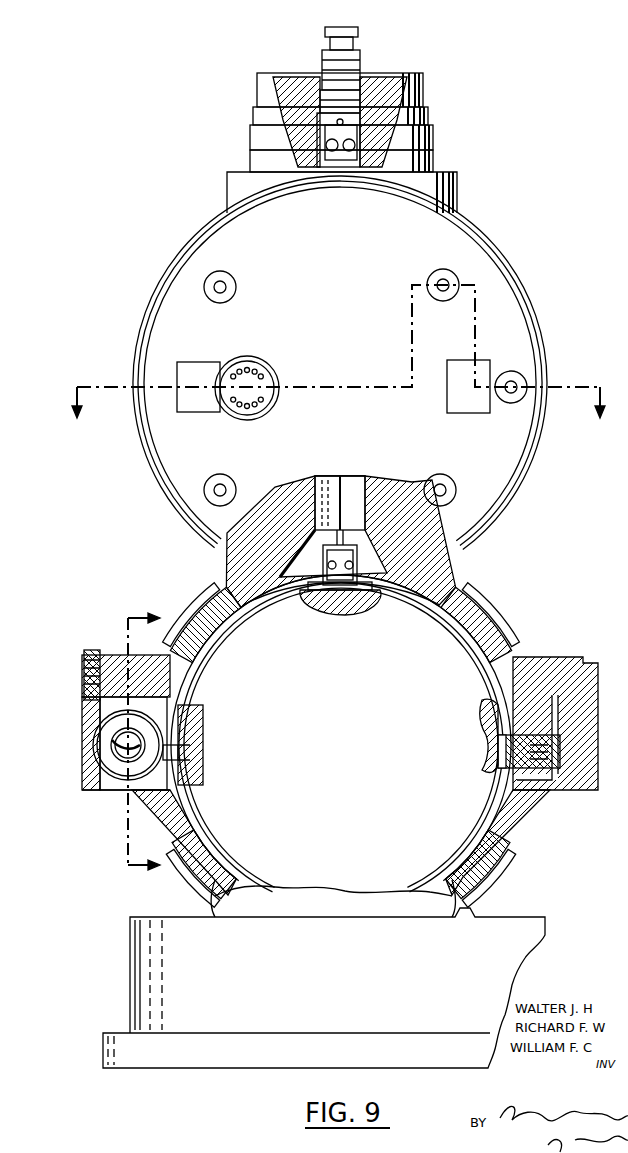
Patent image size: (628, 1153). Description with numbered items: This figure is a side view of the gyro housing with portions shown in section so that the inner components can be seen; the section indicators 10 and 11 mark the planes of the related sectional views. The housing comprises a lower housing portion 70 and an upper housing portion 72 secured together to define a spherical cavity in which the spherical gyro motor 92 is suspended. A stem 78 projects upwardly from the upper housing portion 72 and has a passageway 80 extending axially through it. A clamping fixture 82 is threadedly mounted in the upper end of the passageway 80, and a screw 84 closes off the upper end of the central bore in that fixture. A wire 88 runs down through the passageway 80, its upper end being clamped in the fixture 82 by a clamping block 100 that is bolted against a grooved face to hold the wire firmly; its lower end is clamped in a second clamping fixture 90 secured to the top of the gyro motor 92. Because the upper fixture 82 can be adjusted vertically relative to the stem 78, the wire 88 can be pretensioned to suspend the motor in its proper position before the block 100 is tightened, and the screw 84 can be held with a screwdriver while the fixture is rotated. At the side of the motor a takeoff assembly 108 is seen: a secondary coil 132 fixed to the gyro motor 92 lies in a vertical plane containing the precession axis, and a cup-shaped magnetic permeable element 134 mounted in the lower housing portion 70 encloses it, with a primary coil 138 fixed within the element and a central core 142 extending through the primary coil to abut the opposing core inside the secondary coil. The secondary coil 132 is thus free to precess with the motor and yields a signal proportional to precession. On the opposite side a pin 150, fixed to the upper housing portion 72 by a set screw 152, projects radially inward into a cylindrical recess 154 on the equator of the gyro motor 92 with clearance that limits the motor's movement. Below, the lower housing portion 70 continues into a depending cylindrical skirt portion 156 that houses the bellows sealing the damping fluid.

The section line 10- 10 is at (339, 368).
The section line 11- 11 is at (157, 742).
The lower housing portion 70 is at (525, 830).
The upper housing portion 72 is at (210, 605).
The stem 78 is at (458, 197).
The passageway 80 is at (358, 490).
The clamping fixture 82 is at (327, 62).
The screw 84 is at (358, 30).
The wire 88 is at (330, 500).
The clamping fixture 90 is at (348, 575).
The spherical gyro motor 92 is at (374, 744).
The clamping block 100 is at (347, 167).
The takeoff assembly 108 is at (100, 760).
The secondary coil 132 is at (95, 720).
The cup-shaped magnetic permeable element 134 is at (100, 745).
The primary coil 138 is at (185, 775).
The central core 142 is at (125, 757).
The pin 150 is at (502, 712).
The set screw 152 is at (546, 790).
The cylindrical recess 154 is at (500, 770).
The skirt portion 156 is at (545, 930).